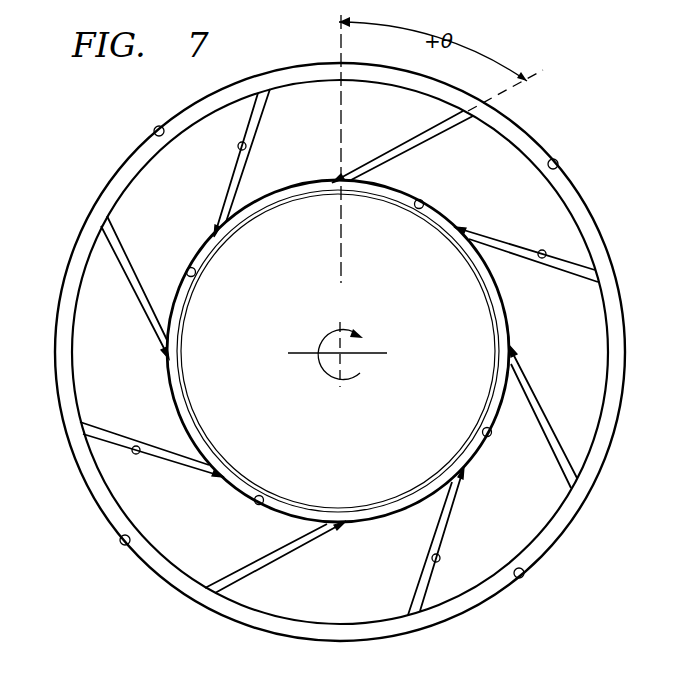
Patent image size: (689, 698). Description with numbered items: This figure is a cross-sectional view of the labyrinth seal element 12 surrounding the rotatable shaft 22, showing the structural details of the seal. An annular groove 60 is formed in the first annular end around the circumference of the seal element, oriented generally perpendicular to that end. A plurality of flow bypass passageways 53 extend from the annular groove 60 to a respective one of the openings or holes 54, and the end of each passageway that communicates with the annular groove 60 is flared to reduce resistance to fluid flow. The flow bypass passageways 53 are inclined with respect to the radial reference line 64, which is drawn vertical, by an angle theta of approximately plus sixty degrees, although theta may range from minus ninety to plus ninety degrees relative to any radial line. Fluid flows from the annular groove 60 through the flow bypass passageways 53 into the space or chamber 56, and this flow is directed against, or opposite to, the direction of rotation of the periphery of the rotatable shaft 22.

The rotor assembly 12 is at (58, 176).
The rotatable shaft 22 is at (394, 420).
The flow bypass passageways 53 is at (247, 143).
The openings or holes 54 is at (181, 350).
The space or chamber 56 is at (189, 269).
The annular groove 60 is at (156, 130).
The radial reference line 64 is at (340, 42).